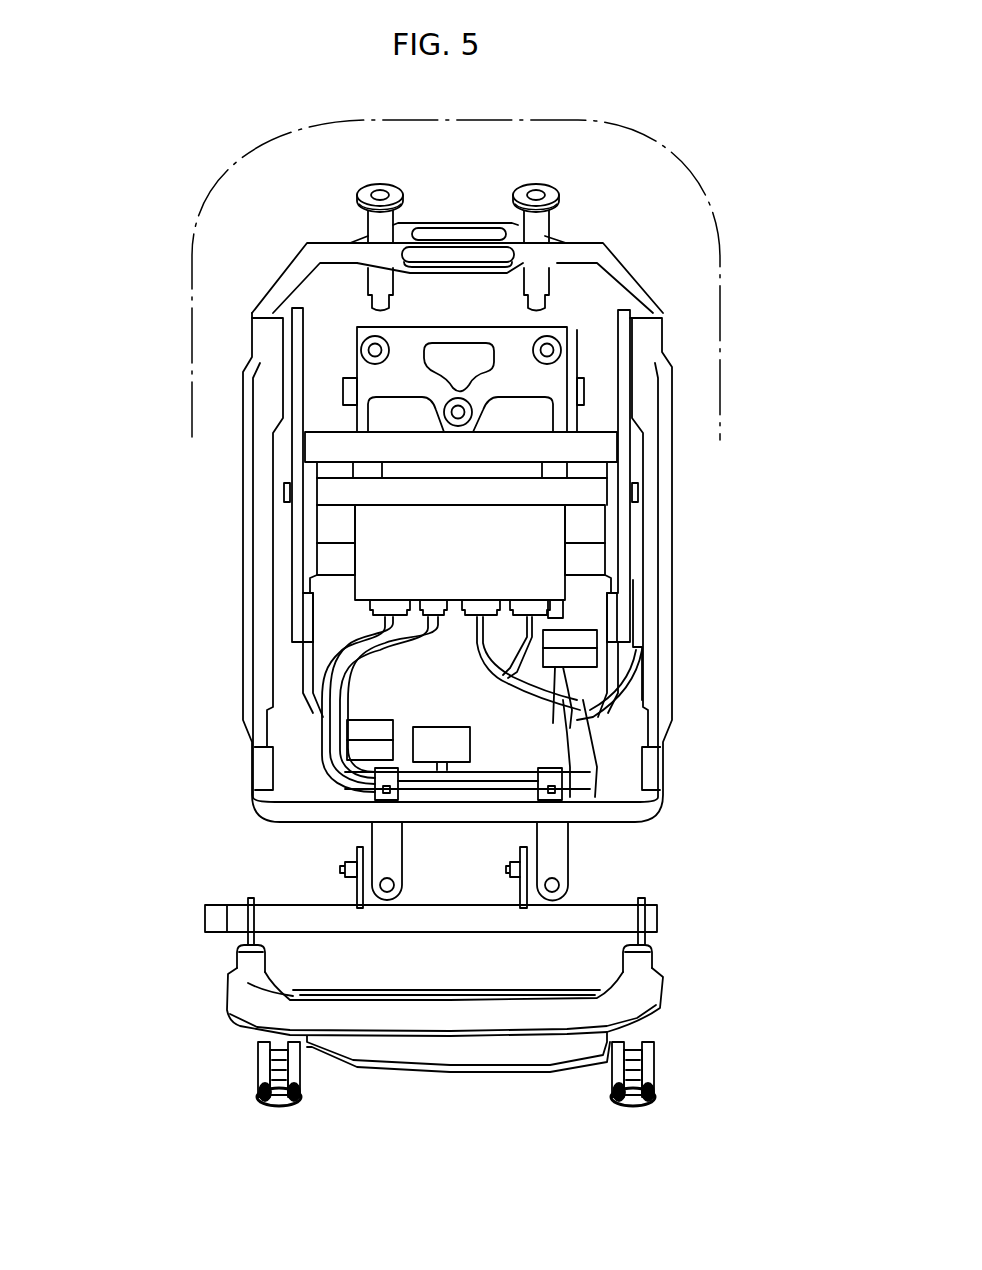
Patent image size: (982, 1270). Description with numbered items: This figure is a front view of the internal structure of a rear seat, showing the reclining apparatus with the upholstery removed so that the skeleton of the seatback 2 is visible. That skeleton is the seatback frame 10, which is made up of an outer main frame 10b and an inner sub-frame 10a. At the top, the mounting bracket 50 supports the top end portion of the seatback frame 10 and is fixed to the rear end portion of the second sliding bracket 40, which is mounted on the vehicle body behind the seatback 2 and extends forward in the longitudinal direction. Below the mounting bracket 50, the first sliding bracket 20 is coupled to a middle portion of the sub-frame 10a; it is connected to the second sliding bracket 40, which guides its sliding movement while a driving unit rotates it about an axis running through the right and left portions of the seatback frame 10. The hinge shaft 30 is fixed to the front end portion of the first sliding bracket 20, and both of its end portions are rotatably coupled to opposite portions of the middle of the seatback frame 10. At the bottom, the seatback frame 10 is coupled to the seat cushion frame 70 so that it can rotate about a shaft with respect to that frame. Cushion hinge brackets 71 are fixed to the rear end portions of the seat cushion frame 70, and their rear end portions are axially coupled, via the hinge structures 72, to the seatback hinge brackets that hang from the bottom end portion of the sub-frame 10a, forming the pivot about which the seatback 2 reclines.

The seatback 2 is at (698, 186).
The seatback frame 10 is at (92, 498).
The sub-frame 10a is at (297, 526).
The main frame 10b is at (264, 607).
The first sliding bracket 20 is at (362, 420).
The hinge shaft 30 is at (590, 492).
The second sliding bracket 40 is at (624, 380).
The mounting bracket 50 is at (515, 356).
The seat cushion frame 70 is at (637, 1053).
The cushion hinge bracket 71 is at (357, 894).
The hinge structure 72 is at (343, 868).